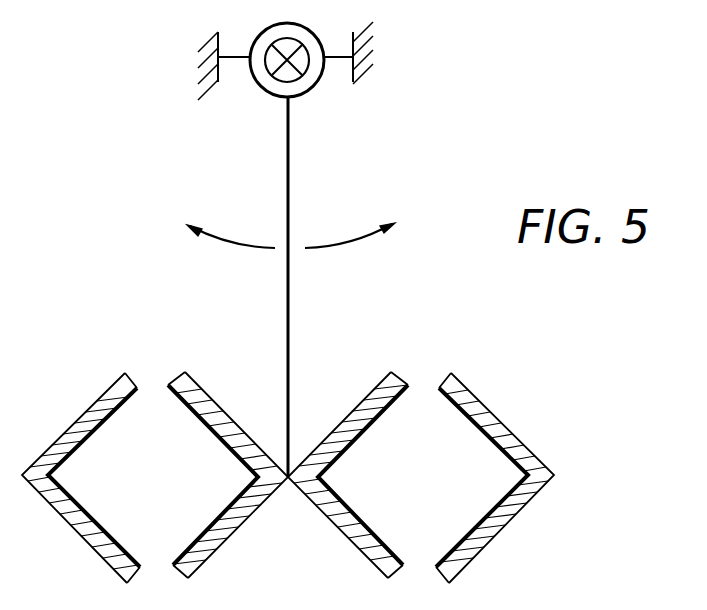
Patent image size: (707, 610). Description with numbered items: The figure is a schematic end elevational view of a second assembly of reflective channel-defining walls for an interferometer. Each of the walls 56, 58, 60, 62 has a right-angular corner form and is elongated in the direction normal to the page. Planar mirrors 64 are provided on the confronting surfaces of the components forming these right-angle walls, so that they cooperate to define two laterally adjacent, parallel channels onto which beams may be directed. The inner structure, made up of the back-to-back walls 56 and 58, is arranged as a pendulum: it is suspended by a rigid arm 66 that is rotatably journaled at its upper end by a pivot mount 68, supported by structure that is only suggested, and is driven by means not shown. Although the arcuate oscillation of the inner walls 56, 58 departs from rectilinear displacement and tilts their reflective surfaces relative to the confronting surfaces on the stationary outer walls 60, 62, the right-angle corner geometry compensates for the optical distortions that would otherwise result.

The reflective channel-defining wall 56 is at (221, 407).
The reflective channel-defining wall 58 is at (358, 407).
The stationary outer wall 60 is at (72, 425).
The stationary outer wall 62 is at (488, 420).
The planar mirror 64 is at (128, 396).
The rigid arm 66 is at (289, 318).
The pivot mount 68 is at (298, 63).